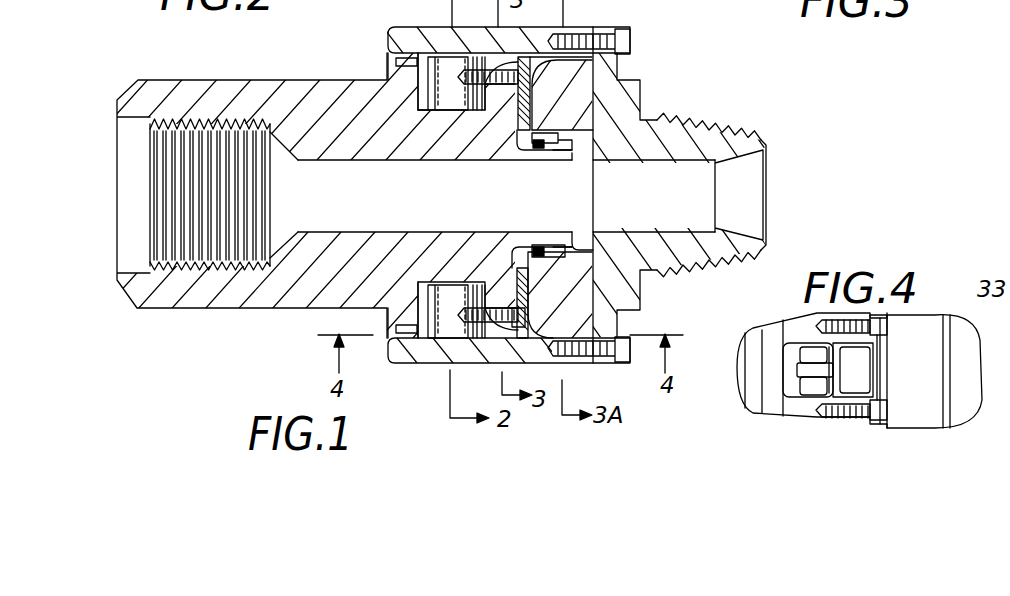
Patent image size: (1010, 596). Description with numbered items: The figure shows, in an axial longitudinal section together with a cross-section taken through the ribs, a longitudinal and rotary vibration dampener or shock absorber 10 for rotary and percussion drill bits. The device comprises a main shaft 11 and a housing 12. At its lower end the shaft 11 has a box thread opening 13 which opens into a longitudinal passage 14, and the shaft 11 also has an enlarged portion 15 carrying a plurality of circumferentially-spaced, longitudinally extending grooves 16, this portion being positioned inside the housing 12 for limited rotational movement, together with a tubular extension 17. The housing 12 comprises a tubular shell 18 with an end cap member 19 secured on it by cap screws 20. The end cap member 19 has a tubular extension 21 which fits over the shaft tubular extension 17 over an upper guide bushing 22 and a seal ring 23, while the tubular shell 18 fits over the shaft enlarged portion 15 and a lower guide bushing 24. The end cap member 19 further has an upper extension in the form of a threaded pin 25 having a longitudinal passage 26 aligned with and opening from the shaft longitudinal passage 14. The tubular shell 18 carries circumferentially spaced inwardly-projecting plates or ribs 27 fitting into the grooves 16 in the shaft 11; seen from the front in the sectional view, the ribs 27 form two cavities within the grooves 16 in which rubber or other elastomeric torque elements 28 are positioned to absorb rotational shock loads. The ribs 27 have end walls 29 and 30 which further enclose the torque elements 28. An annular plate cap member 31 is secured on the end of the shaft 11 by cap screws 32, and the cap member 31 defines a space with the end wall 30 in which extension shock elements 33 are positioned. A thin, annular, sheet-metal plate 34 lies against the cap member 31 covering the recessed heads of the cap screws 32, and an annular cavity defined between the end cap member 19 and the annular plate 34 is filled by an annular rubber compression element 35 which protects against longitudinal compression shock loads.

In FIG. 1, the longitudinal and rotary vibration dampener or shock absorber 10 is at (338, 70).
In FIG. 1, the main shaft 11 is at (212, 318).
In FIG. 1, the housing 12 is at (391, 21).
In FIG. 1, the box thread opening 13 is at (188, 125).
In FIG. 1, the longitudinal passage 14 is at (353, 197).
In FIG. 1, the enlarged portion 15 is at (396, 62).
In FIG. 1, the grooves 16 is at (417, 90).
In FIG. 1, the tubular extension 17 is at (543, 158).
In FIG. 1, the tubular shell 18 is at (395, 46).
In FIG. 1, the end cap member 19 is at (627, 292).
In FIG. 1, the cap screws 20 is at (632, 36).
In FIG. 1, the tubular extension 21 is at (598, 252).
In FIG. 1, the upper guide bushing 22 is at (577, 240).
In FIG. 1, the seal ring 23 is at (537, 246).
In FIG. 1, the lower guide bushing 24 is at (399, 345).
In FIG. 4, the lower guide bushing 24 is at (770, 400).
In FIG. 1, the threaded pin 25 is at (707, 128).
In FIG. 1, the longitudinal passage 26 is at (693, 207).
In FIG. 1, the plates or ribs 27 is at (446, 112).
In FIG. 4, the plates or ribs 27 is at (797, 370).
In FIG. 4, the torque elements 28 is at (813, 350).
In FIG. 1, the end wall 29 is at (420, 284).
In FIG. 1, the end wall 30 is at (495, 285).
In FIG. 4, the end wall 30 is at (834, 393).
In FIG. 1, the annular plate cap member 31 is at (526, 306).
In FIG. 4, the annular plate cap member 31 is at (880, 350).
In FIG. 1, the cap screws 32 is at (568, 195).
In FIG. 1, the extension shock elements 33 is at (493, 108).
In FIG. 4, the extension shock elements 33 is at (867, 372).
In FIG. 1, the sheet-metal plate 34 is at (568, 362).
In FIG. 4, the sheet-metal plate 34 is at (890, 413).
In FIG. 1, the annular rubber compression element 35 is at (590, 75).